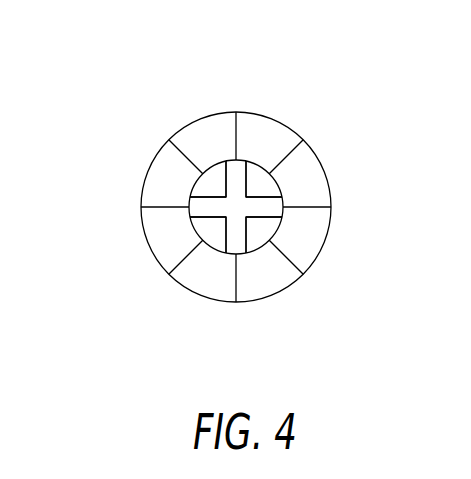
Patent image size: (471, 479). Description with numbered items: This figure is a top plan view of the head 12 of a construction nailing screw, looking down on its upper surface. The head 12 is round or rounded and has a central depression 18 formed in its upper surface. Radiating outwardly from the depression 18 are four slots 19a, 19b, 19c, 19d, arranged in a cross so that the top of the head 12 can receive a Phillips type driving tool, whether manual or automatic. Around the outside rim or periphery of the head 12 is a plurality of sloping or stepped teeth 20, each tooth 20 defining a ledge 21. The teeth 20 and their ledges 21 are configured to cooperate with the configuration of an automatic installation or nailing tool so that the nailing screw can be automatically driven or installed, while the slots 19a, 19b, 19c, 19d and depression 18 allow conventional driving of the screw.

The head 12 is at (328, 157).
The central depression 18 is at (233, 206).
The slot 19a is at (237, 180).
The slot 19b is at (266, 207).
The slot 19c is at (235, 233).
The slot 19d is at (203, 200).
The teeth 20 is at (202, 272).
The ledge 21 is at (237, 283).